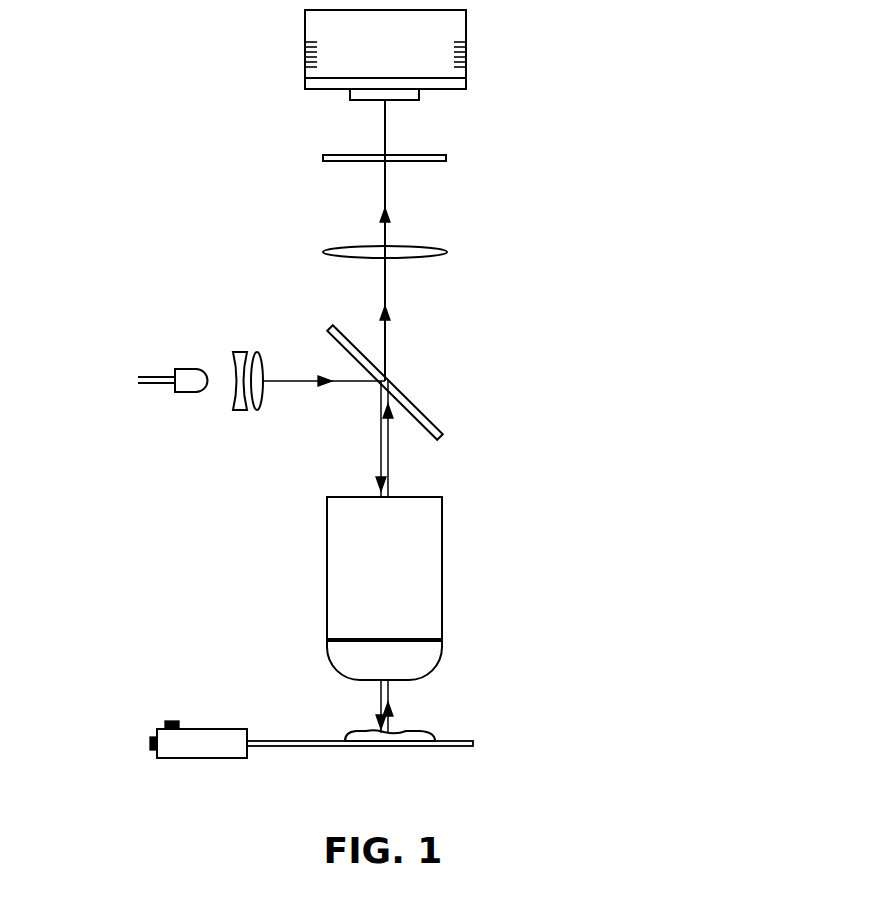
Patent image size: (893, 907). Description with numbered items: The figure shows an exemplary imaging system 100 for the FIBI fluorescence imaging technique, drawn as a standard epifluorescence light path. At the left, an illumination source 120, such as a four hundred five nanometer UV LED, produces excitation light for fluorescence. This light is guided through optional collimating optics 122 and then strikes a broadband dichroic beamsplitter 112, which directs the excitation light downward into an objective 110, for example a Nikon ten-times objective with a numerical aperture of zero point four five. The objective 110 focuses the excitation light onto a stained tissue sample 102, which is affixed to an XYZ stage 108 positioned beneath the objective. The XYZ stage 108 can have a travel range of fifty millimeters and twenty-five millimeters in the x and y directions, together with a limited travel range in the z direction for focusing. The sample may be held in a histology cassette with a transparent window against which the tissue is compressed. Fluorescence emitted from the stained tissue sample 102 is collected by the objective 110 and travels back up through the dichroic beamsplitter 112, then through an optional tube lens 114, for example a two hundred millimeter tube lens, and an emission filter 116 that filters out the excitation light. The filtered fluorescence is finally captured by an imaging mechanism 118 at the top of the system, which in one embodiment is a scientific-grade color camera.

The imaging system 100 is at (115, 153).
The stained tissue sample 102 is at (420, 725).
The XYZ stage 108 is at (311, 774).
The objective 110 is at (448, 588).
The dichroic beamsplitter 112 is at (418, 382).
The tube lens 114 is at (447, 262).
The emission filter 116 is at (437, 161).
The imaging mechanism 118 is at (385, 55).
The illumination source 120 is at (113, 378).
The collimating optics 122 is at (250, 346).